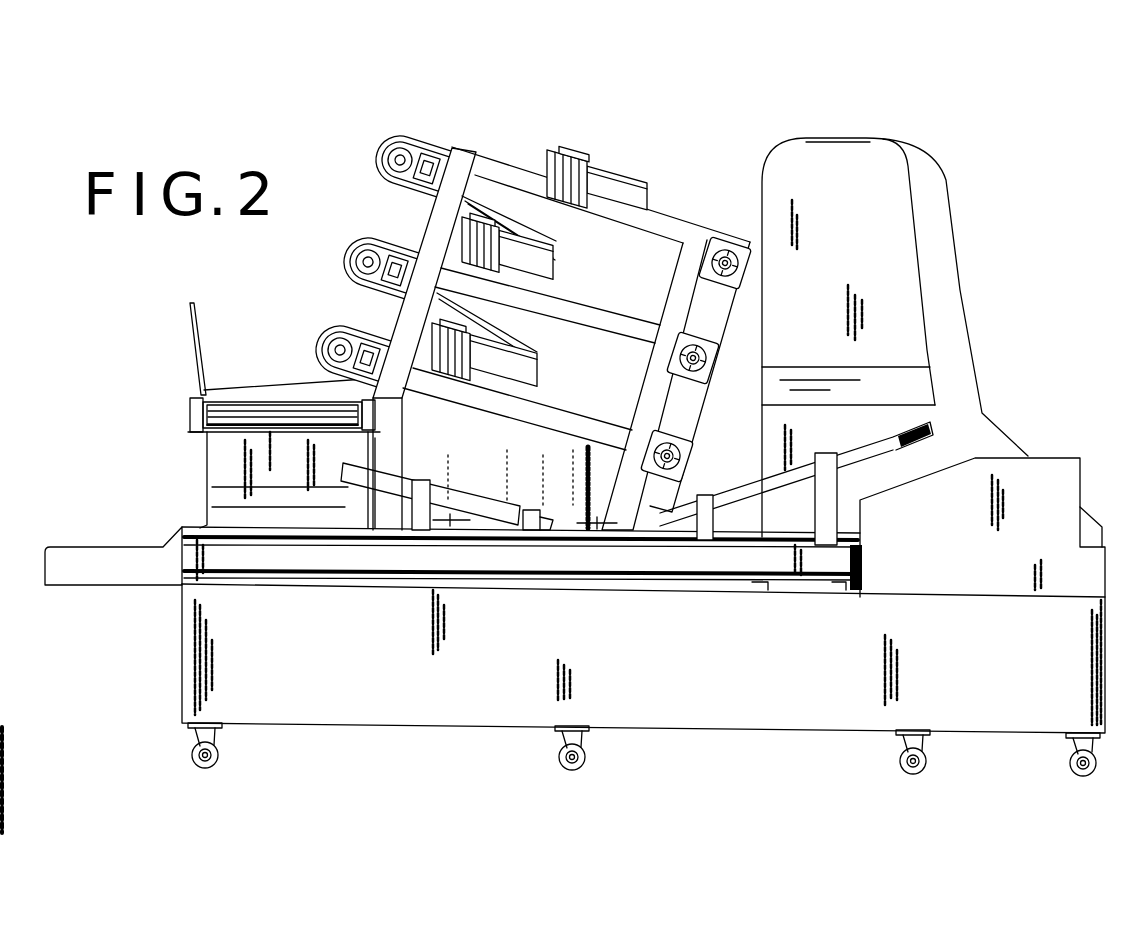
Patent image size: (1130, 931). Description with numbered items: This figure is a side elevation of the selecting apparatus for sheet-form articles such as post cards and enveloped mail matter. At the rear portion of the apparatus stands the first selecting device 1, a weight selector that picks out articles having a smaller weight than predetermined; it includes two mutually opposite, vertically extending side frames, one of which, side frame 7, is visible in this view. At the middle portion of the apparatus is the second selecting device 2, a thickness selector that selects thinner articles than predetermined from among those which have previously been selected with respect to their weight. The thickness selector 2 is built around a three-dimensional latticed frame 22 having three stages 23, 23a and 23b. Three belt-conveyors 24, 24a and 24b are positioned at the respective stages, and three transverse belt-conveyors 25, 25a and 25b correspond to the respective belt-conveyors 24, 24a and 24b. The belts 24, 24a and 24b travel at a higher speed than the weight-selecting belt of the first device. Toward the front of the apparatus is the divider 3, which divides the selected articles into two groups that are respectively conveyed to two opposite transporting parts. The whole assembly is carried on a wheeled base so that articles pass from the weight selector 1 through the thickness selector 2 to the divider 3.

The first selecting device 1 is at (952, 211).
The second selecting device 2 is at (503, 326).
The divider 3 is at (242, 414).
The side frame 7 is at (955, 294).
The latticed frame 22 is at (432, 217).
The stage 23 is at (497, 175).
The stage 23a is at (607, 314).
The stage 23b is at (563, 405).
The belt-conveyor 24 is at (380, 166).
The belt-conveyor 24a is at (356, 252).
The belt-conveyor 24b is at (323, 336).
The transverse belt-conveyor 25 is at (551, 172).
The transverse belt-conveyor 25a is at (550, 256).
The transverse belt-conveyor 25b is at (437, 388).